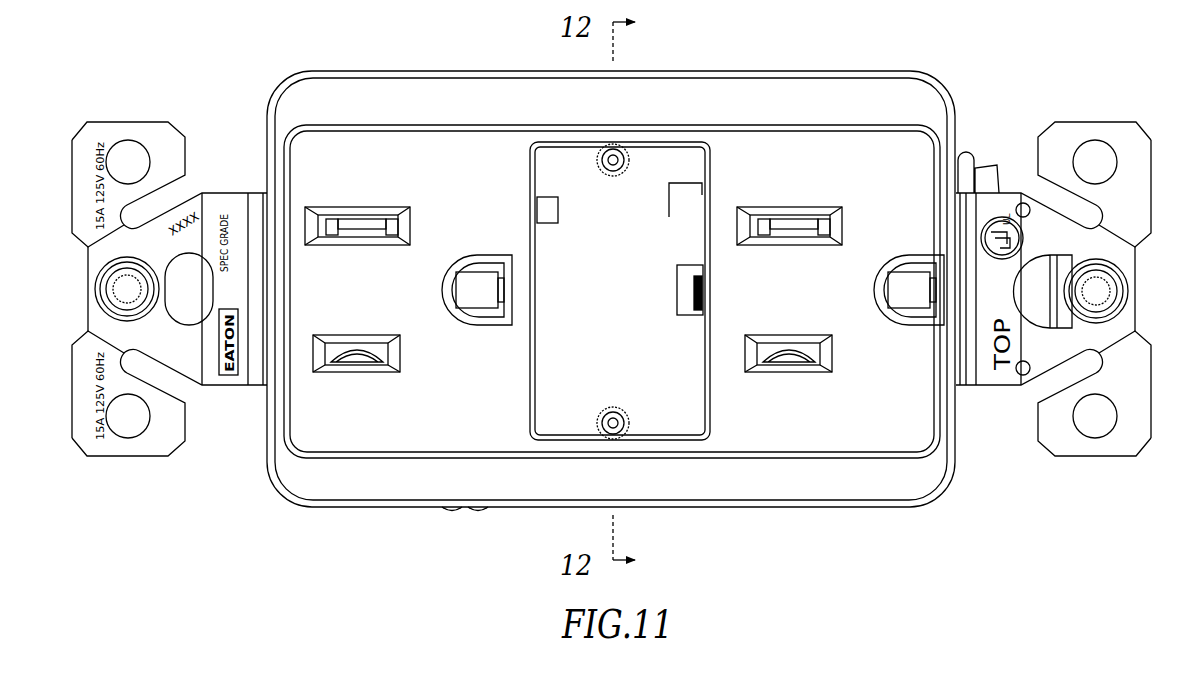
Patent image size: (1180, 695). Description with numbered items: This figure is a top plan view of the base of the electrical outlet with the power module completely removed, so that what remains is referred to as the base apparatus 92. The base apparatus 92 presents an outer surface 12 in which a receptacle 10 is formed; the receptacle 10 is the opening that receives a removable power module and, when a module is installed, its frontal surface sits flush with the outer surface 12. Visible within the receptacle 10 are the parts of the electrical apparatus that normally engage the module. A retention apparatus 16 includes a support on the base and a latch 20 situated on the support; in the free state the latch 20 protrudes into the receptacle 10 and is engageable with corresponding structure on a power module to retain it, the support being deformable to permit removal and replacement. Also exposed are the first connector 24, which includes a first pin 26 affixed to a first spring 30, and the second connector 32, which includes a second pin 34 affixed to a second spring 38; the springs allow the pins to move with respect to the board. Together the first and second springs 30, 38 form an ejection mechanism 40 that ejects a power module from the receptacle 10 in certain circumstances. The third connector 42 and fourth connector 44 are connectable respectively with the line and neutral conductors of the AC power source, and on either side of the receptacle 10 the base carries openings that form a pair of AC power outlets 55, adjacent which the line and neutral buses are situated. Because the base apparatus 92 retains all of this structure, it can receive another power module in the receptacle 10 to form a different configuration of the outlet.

The receptacle 10 is at (661, 156).
The outer surface 12 is at (928, 148).
The retention apparatus 16 is at (680, 292).
The latch 20 is at (690, 265).
The first connector 24 is at (634, 421).
The first pin 26 is at (611, 408).
The first spring 30 is at (622, 408).
The second connector 32 is at (602, 150).
The second pin 34 is at (613, 178).
The second spring 38 is at (672, 200).
The ejection mechanism 40 is at (601, 410).
The third connector 42 is at (455, 510).
The fourth connector 44 is at (462, 70).
The AC power outlets 55 is at (366, 206).
The base apparatus 92 is at (850, 68).